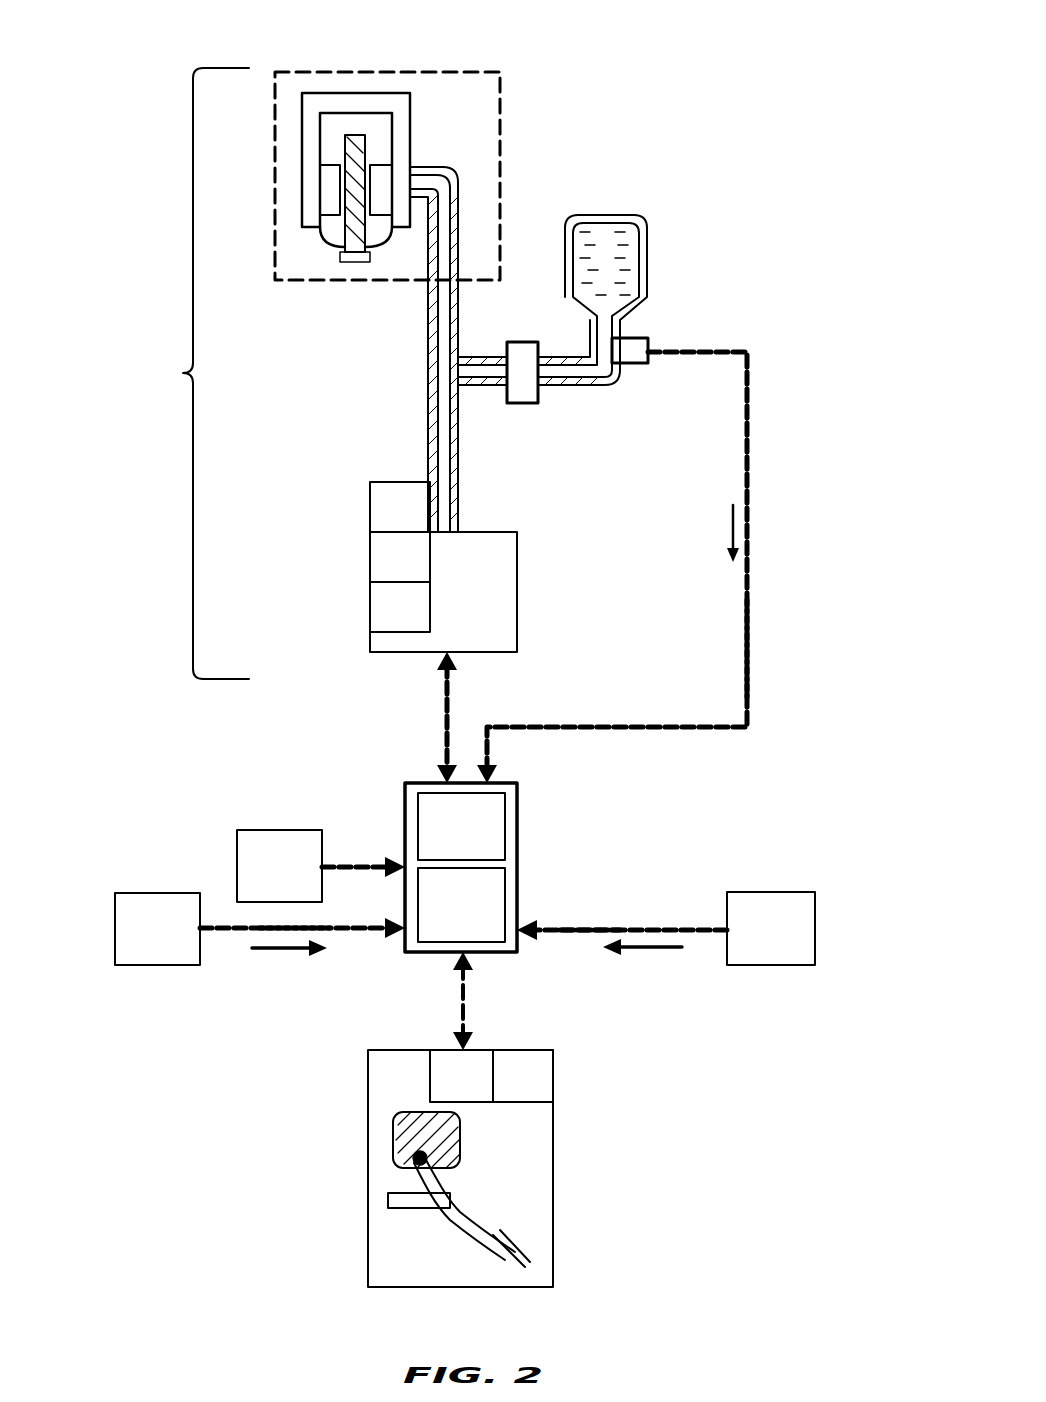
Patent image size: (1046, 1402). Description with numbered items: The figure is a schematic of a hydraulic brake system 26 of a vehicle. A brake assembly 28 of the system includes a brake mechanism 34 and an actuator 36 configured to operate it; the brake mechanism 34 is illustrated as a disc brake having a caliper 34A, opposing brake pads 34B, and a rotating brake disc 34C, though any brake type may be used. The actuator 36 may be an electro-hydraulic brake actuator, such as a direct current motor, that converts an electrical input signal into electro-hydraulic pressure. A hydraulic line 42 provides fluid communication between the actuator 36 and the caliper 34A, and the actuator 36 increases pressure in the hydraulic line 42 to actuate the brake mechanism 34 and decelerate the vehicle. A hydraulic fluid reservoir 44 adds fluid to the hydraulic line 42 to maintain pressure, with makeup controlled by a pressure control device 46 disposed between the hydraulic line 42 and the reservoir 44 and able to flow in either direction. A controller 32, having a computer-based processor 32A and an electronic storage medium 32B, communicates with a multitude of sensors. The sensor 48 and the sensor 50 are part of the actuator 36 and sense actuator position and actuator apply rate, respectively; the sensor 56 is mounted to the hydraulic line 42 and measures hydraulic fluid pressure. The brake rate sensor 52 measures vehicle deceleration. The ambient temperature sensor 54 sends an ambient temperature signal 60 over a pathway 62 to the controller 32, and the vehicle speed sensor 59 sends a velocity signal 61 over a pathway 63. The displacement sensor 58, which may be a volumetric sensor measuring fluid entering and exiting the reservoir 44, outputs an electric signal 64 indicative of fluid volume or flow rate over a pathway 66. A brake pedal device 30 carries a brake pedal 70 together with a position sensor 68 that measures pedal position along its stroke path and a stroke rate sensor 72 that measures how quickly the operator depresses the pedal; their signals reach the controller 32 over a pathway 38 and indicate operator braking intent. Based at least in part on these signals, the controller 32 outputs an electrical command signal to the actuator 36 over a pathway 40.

The hydraulic brake system 26 is at (712, 80).
The brake assembly 28 is at (183, 373).
The brake pedal device 30 is at (565, 1165).
The controller 32 is at (528, 874).
The processor 32A is at (461, 826).
The electronic storage medium 32B is at (461, 905).
The brake mechanism 34 is at (512, 127).
The caliper 34A is at (410, 118).
The brake pads 34B is at (345, 247).
The brake disc 34C is at (345, 148).
The actuator 36 is at (528, 588).
The pathway 38 is at (467, 1002).
The pathway 40 is at (452, 715).
The hydraulic line 42 is at (458, 507).
The hydraulic fluid reservoir 44 is at (647, 250).
The pressure control device 46 is at (540, 400).
The sensor 48 is at (400, 557).
The sensor 50 is at (400, 607).
The brake rate sensor 52 is at (321, 866).
The ambient temperature sensor 54 is at (260, 929).
The sensor 56 is at (400, 507).
The displacement sensor 58 is at (635, 338).
The vehicle speed sensor 59 is at (666, 928).
The ambient temperature signal 60 is at (267, 952).
The velocity signal 61 is at (665, 952).
The pathway 62 is at (345, 934).
The pathway 63 is at (588, 936).
The electric signal 64 is at (733, 530).
The pathway 66 is at (745, 652).
The position sensor 68 is at (461, 1076).
The brake pedal 70 is at (457, 1205).
The stroke rate sensor 72 is at (523, 1076).